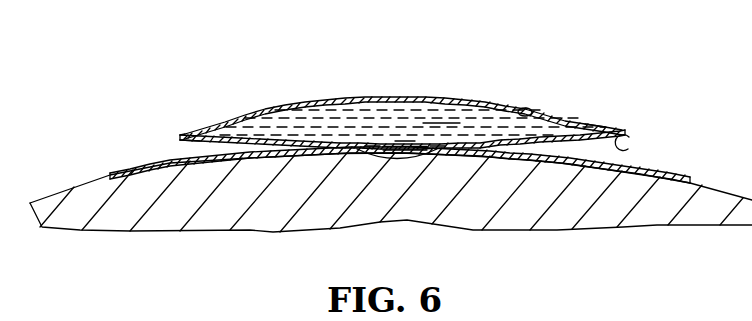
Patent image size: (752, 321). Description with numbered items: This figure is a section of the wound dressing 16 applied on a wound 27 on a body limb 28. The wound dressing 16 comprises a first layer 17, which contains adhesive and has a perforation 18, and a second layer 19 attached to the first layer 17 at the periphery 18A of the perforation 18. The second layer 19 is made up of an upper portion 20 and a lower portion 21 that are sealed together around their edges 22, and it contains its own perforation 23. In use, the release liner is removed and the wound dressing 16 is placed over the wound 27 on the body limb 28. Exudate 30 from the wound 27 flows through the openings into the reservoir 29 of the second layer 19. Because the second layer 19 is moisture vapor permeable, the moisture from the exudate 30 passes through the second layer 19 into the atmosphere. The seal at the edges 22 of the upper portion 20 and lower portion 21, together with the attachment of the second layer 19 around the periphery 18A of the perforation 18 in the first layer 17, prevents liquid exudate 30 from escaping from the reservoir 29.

The wound dressing 16 is at (586, 98).
The first layer 17 is at (672, 168).
The perforation 18 is at (386, 145).
The periphery of perforation 18A is at (371, 144).
The second layer 19 is at (183, 124).
The upper portion 20 is at (277, 106).
The lower portion 21 is at (641, 140).
The edges (seal) 22 is at (180, 139).
The perforation 23 is at (403, 140).
The wound 27 is at (407, 157).
The body limb 28 is at (163, 220).
The reservoir 29 is at (518, 108).
The exudate 30 is at (424, 122).